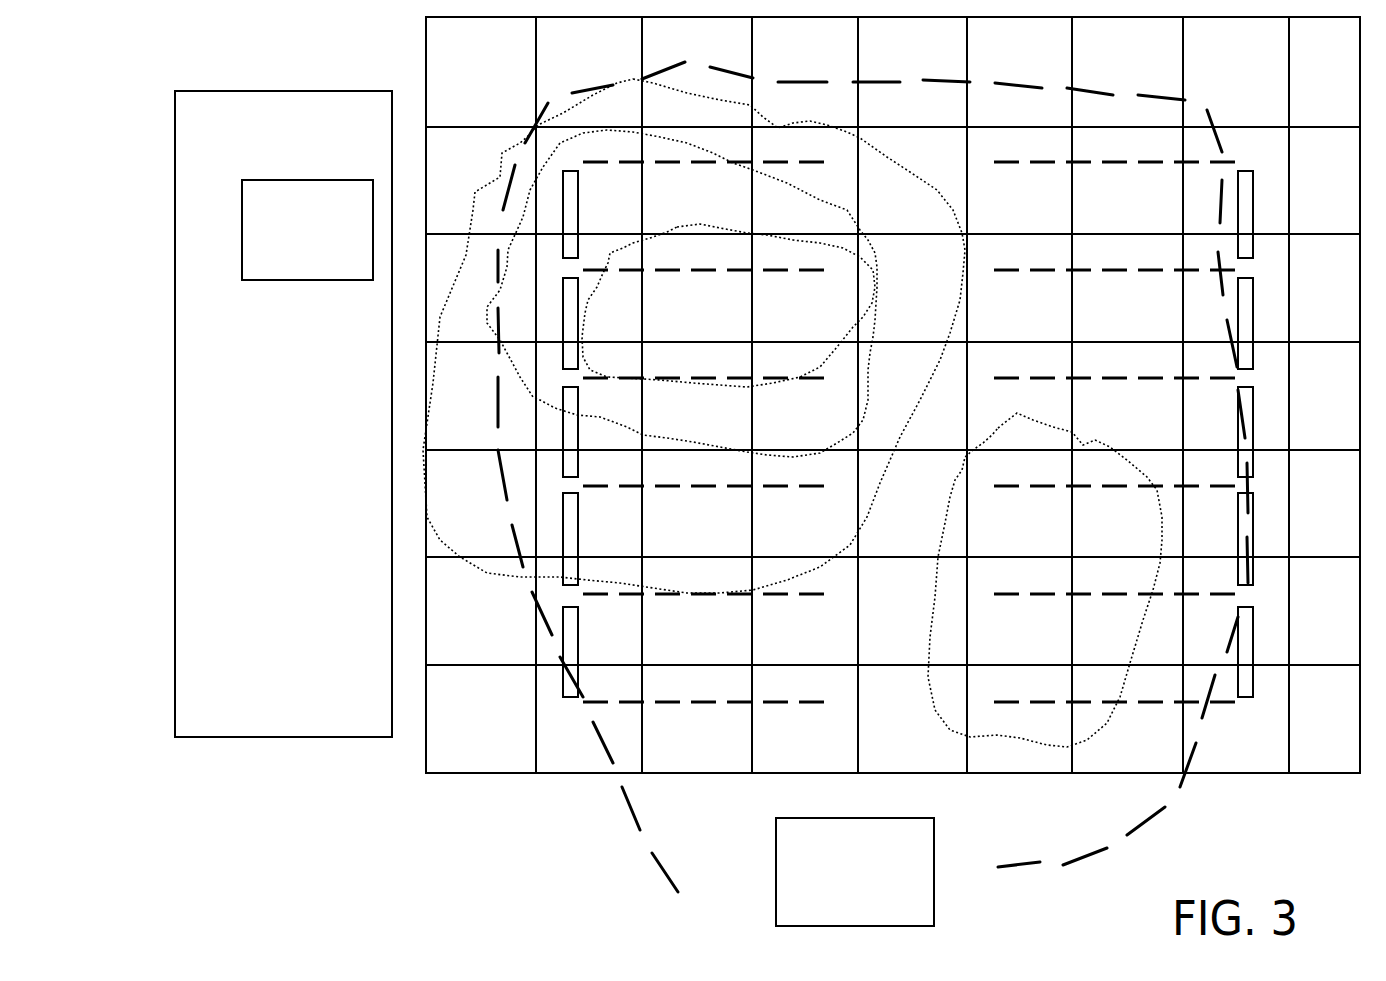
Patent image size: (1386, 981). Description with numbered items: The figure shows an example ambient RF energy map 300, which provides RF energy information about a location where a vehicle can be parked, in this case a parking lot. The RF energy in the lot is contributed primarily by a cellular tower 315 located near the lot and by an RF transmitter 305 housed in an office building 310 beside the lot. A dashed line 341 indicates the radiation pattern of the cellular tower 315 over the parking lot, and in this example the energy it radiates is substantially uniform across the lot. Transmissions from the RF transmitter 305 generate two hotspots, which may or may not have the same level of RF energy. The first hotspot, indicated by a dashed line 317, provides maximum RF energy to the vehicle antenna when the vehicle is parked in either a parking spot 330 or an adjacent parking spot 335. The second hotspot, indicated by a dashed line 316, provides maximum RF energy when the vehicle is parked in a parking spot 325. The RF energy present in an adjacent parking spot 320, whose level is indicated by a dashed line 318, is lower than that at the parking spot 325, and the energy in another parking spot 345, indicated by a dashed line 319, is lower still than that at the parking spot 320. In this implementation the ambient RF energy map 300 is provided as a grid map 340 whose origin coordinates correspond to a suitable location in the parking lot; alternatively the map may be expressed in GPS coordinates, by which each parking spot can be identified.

The ambient RF energy map 300 is at (393, 848).
The RF transmitter 305 is at (368, 208).
The office building 310 is at (316, 418).
The cellular tower 315 is at (870, 851).
The dashed line 316 is at (722, 230).
The dashed line 317 is at (993, 433).
The dashed line 318 is at (883, 318).
The dashed line 319 is at (902, 165).
The parking spot 320 is at (812, 217).
The parking spot 325 is at (813, 323).
The parking spot 330 is at (1018, 543).
The parking spot 335 is at (1027, 652).
The grid map 340 is at (588, 773).
The dashed line 341 is at (420, 777).
The parking spot 345 is at (790, 545).